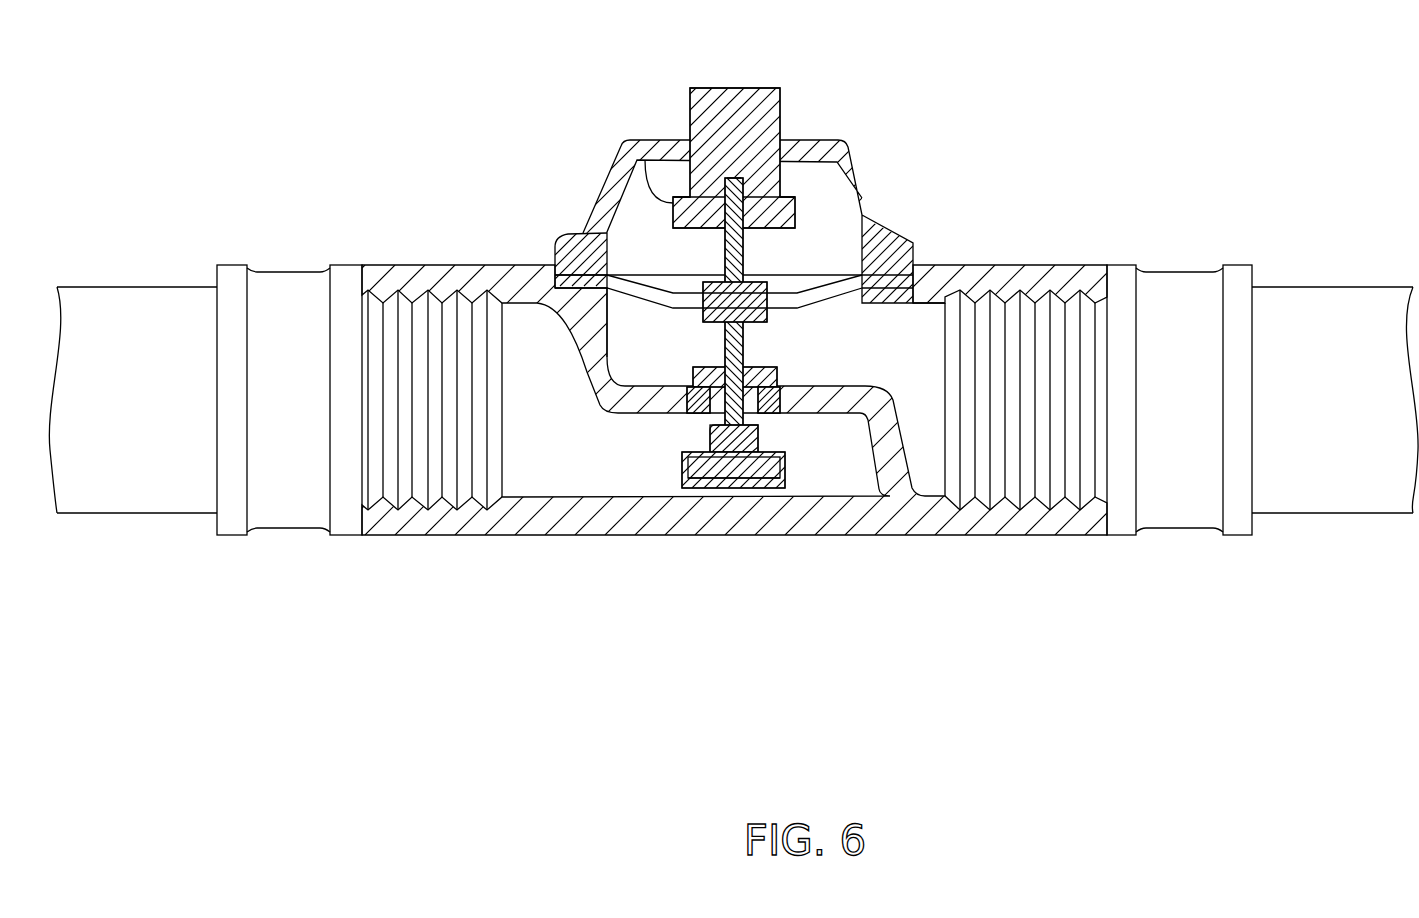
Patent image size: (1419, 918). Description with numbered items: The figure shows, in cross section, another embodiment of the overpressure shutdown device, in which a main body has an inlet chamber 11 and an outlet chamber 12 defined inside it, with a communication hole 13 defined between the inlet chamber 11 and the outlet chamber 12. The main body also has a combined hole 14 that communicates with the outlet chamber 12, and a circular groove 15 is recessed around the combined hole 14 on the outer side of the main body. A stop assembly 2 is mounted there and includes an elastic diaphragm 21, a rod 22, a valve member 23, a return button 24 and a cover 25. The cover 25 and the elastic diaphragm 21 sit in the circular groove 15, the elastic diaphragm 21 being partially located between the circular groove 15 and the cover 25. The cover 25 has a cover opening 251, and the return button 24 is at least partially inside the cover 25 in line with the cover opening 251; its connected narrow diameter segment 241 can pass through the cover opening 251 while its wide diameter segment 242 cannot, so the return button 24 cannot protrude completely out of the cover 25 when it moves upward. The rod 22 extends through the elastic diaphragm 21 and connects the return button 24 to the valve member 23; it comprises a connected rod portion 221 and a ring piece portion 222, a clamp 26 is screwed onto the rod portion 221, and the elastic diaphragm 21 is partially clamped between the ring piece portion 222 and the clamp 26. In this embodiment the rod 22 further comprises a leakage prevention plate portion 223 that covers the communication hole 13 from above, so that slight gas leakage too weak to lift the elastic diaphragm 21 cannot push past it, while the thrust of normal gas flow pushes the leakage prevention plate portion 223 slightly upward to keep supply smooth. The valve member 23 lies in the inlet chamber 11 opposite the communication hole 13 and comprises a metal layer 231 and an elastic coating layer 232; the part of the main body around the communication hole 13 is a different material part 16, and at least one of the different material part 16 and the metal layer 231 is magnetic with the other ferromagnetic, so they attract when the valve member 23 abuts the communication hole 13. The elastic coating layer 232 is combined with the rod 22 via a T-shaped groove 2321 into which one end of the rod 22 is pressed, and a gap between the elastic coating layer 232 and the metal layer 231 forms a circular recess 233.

The stop assembly 2 is at (720, 345).
The inlet chamber 11 is at (514, 457).
The outlet chamber 12 is at (866, 347).
The communication hole 13 is at (705, 405).
The combined hole 14 is at (624, 258).
The circular groove 15 is at (560, 268).
The different material part 16 is at (765, 405).
The elastic diaphragm 21 is at (862, 270).
The rod 22 is at (766, 248).
The rod portion 221 is at (745, 240).
The ring piece portion 222 is at (795, 298).
The leakage prevention plate portion 223 is at (695, 378).
The valve member 23 is at (718, 550).
The metal layer 231 is at (742, 488).
The elastic coating layer 232 is at (778, 478).
The T-shaped groove 2321 is at (690, 470).
The circular recess 233 is at (712, 539).
The return button 24 is at (659, 133).
The narrow diameter segment 241 is at (690, 100).
The wide diameter segment 242 is at (675, 200).
The cover 25 is at (805, 140).
The cover opening 251 is at (775, 160).
The clamp 26 is at (713, 288).